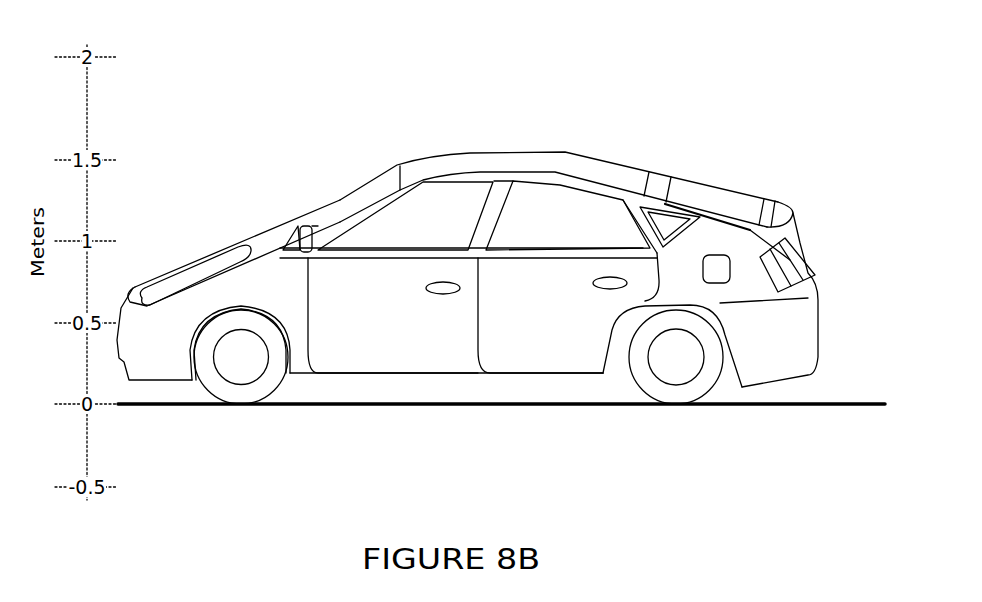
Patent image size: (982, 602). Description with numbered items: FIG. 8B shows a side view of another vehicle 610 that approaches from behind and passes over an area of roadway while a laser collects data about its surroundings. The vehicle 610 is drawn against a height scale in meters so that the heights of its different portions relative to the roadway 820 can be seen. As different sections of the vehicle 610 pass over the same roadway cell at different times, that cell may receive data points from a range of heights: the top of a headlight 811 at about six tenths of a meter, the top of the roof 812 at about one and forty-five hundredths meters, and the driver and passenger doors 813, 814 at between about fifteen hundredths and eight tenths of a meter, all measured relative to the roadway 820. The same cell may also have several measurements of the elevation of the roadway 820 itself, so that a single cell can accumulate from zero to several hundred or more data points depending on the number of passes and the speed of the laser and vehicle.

The headlight 811 is at (158, 277).
The roof 812 is at (502, 163).
The driver door 813 is at (365, 318).
The passenger door 814 is at (560, 317).
The roadway 820 is at (415, 407).
The vehicle 610 is at (620, 173).